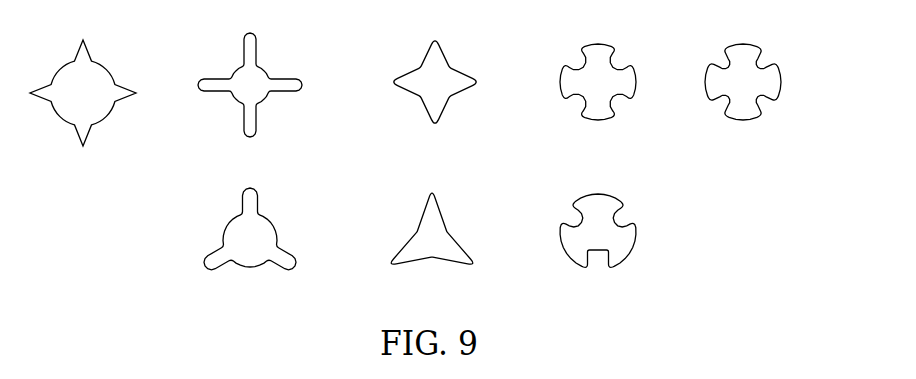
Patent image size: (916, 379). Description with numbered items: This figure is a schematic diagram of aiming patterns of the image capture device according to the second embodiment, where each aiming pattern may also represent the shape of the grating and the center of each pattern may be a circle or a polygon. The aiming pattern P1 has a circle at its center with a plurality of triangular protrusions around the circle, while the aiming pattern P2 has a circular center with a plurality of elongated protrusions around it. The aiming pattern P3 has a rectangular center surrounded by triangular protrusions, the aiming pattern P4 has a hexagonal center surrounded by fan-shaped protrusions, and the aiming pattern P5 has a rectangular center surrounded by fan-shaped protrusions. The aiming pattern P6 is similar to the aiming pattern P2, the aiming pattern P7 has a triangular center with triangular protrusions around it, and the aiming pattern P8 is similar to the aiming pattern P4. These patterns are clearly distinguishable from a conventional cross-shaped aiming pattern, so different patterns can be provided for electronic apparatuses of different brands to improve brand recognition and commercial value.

The aiming pattern P1 is at (98, 63).
The aiming pattern P2 is at (268, 63).
The aiming pattern P3 is at (448, 65).
The aiming pattern P4 is at (618, 63).
The aiming pattern P5 is at (755, 70).
The aiming pattern P6 is at (270, 215).
The aiming pattern P7 is at (447, 228).
The aiming pattern P8 is at (620, 223).